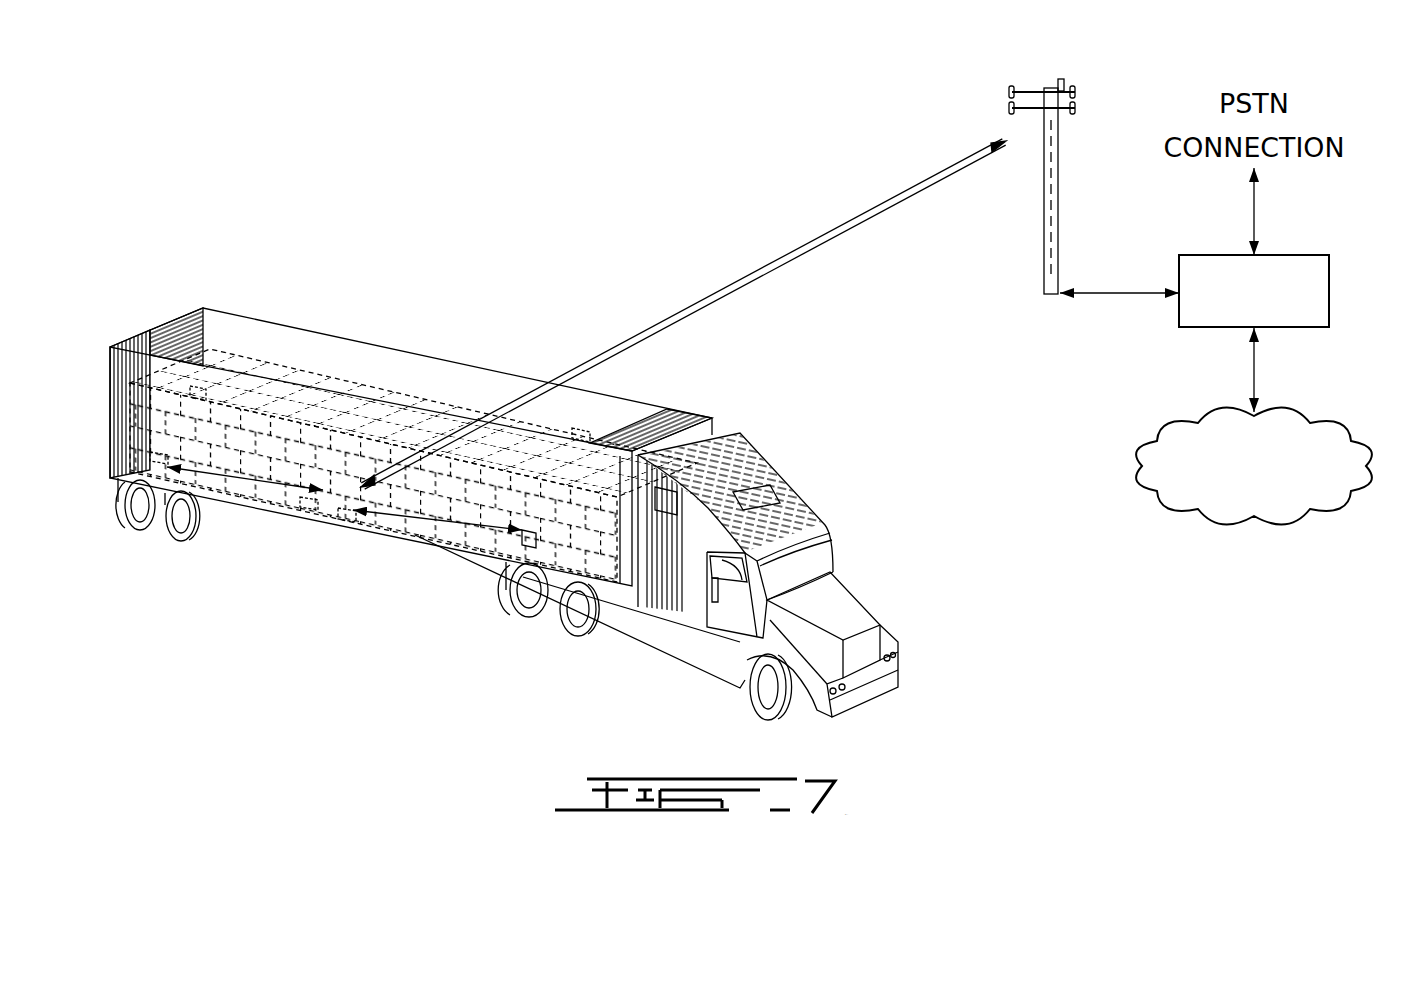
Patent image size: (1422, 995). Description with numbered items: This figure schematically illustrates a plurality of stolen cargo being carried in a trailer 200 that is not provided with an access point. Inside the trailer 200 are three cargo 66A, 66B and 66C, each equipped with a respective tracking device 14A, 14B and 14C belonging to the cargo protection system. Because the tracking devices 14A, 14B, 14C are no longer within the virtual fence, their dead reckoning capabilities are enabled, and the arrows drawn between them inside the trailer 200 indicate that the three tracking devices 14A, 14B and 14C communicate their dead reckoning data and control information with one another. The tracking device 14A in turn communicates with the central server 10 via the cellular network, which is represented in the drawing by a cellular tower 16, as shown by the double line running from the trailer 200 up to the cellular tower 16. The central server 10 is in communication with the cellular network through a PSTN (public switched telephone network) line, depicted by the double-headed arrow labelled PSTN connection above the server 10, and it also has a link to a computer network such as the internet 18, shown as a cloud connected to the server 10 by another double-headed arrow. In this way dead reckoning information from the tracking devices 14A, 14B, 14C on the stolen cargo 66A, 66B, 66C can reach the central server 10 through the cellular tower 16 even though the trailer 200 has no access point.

The trailer 200 is at (118, 350).
The cargo 66A is at (310, 510).
The cargo 66B is at (580, 427).
The cargo 66C is at (197, 383).
The tracking device 14A is at (340, 523).
The tracking device 14B is at (530, 537).
The tracking device 14C is at (152, 527).
The cellular tower 16 is at (1050, 200).
The central server 10 is at (1322, 292).
The internet 18 is at (1332, 498).